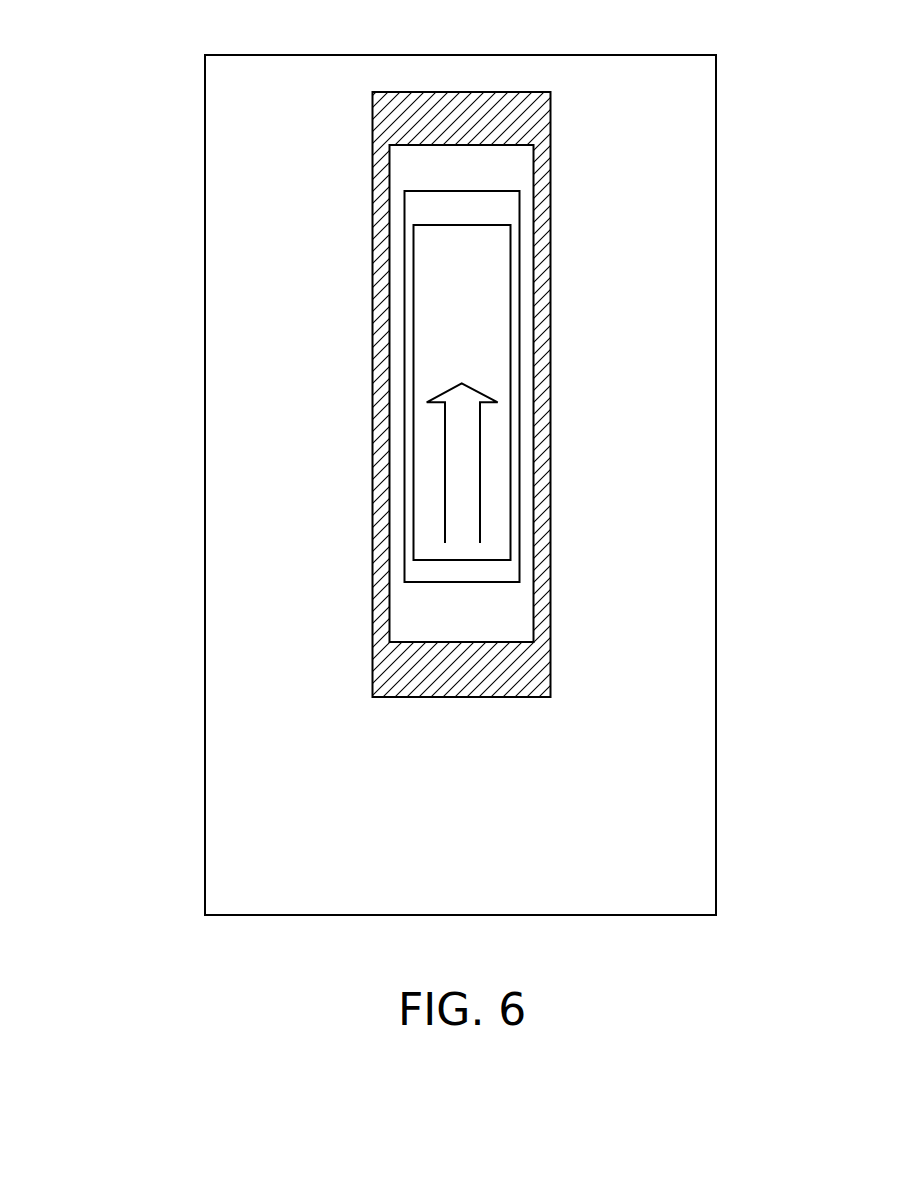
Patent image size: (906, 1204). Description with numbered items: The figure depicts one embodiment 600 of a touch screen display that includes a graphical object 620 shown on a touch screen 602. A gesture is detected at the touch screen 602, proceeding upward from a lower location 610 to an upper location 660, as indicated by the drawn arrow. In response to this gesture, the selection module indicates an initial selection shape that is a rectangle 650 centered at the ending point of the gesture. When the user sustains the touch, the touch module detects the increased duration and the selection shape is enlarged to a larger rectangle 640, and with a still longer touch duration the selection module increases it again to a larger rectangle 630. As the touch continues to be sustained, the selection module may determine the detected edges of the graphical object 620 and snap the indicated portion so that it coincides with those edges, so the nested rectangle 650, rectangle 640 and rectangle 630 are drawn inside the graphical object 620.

The embodiment of a touch screen display 600 is at (138, 63).
The touch screen 602 is at (716, 447).
The lower location 610 is at (443, 540).
The graphical object 620 is at (547, 698).
The larger rectangle 630 is at (535, 565).
The larger rectangle 640 is at (518, 434).
The rectangle 650 is at (510, 278).
The upper location 660 is at (462, 383).